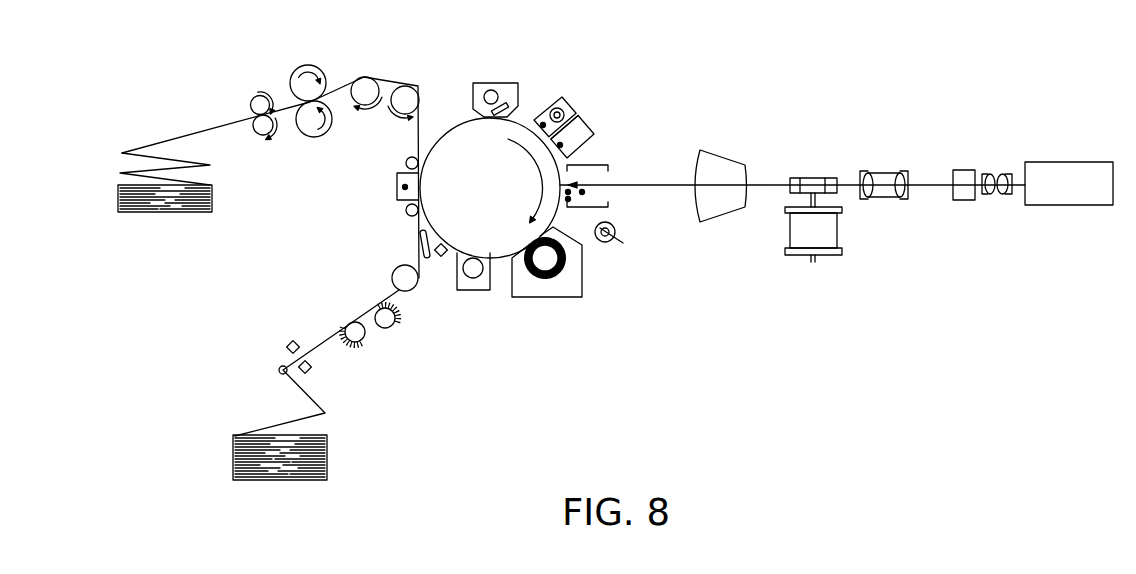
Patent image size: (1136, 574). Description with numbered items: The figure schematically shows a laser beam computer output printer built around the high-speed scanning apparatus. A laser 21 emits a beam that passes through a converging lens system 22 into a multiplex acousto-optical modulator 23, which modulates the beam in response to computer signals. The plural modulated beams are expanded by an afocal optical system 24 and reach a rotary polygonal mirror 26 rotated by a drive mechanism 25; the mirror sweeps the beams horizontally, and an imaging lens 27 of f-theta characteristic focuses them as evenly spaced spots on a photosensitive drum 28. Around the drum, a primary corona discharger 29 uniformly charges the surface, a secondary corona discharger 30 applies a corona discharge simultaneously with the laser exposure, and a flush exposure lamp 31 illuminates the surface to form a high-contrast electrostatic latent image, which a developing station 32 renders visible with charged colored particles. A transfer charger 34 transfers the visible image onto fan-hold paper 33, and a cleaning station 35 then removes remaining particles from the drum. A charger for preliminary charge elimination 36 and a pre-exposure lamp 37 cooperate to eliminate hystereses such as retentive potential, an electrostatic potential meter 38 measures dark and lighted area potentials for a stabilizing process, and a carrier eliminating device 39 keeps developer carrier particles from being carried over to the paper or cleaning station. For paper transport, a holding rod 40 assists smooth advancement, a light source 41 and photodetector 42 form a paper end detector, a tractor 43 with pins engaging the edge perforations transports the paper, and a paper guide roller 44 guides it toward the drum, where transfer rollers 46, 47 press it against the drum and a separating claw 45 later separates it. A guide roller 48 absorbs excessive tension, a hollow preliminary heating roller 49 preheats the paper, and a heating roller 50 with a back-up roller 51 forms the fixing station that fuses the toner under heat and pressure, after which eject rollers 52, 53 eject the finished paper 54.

The laser 21 is at (1082, 162).
The converging lens system 22 is at (1000, 173).
The multiplex acousto-optical modulator 23 is at (965, 170).
The afocal optical system 24 is at (883, 172).
The drive mechanism 25 is at (833, 253).
The rotary polygonal mirror 26 is at (818, 178).
The imaging lens 27 is at (730, 153).
The photosensitive drum 28 is at (450, 132).
The primary corona discharger 29 is at (587, 125).
The secondary corona discharger 30 is at (608, 165).
The flush exposure lamp 31 is at (615, 228).
The developing station 32 is at (557, 298).
The fan-hold paper 33 is at (233, 467).
The transfer charger 34 is at (397, 189).
The cleaning station 35 is at (487, 83).
The charger for preliminary charge elimination 36 is at (572, 113).
The pre-exposure lamp 37 is at (557, 100).
The electrostatic potential meter 38 is at (443, 257).
The carrier eliminating device 39 is at (468, 292).
The holding rod 40 is at (278, 370).
The light source 41 is at (310, 371).
The photodetector 42 is at (288, 342).
The tractor 43 is at (382, 333).
The paper guide roller 44 is at (392, 280).
The separating claw 45 is at (420, 247).
The transfer roller 46 is at (406, 212).
The transfer roller 47 is at (406, 160).
The guide roller 48 is at (409, 87).
The hollow preliminary heating roller 49 is at (364, 77).
The heating roller 50 is at (295, 70).
The back-up roller 51 is at (318, 137).
The eject roller 52 is at (252, 103).
The eject roller 53 is at (258, 134).
The paper 54 is at (175, 212).